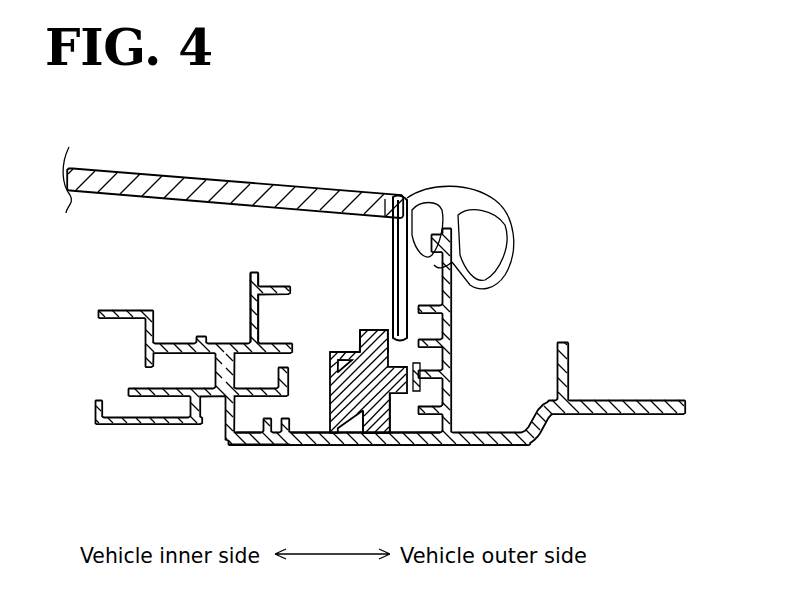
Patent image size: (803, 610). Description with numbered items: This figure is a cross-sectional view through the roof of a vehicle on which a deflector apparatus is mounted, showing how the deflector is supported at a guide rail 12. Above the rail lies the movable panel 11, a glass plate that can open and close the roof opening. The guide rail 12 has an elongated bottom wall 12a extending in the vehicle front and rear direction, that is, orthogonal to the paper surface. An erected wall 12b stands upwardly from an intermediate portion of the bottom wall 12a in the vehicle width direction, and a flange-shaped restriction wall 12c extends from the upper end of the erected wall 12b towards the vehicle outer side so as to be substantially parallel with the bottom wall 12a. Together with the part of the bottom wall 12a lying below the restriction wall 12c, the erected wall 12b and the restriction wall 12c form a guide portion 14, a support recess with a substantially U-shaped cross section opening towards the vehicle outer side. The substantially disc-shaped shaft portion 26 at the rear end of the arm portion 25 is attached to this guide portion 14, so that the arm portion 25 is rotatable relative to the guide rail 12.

The movable panel 11 is at (138, 168).
The guide rail 12 is at (539, 458).
The bottom wall 12a is at (429, 446).
The erected wall 12b is at (318, 425).
The restriction wall 12c is at (342, 346).
The guide portion 14 is at (322, 380).
The arm portion 25 is at (371, 330).
The shaft portion 26 is at (349, 446).